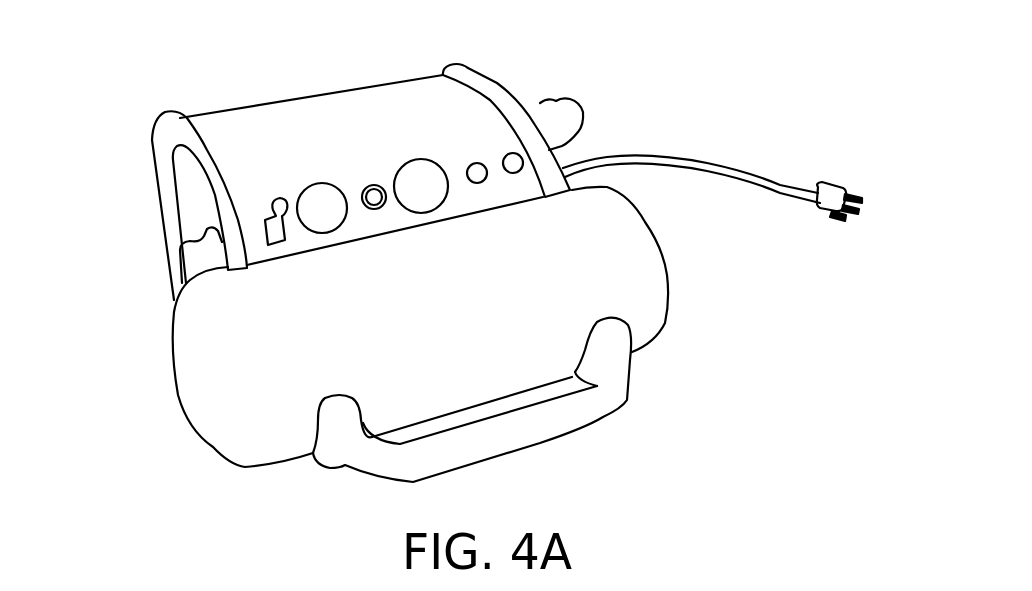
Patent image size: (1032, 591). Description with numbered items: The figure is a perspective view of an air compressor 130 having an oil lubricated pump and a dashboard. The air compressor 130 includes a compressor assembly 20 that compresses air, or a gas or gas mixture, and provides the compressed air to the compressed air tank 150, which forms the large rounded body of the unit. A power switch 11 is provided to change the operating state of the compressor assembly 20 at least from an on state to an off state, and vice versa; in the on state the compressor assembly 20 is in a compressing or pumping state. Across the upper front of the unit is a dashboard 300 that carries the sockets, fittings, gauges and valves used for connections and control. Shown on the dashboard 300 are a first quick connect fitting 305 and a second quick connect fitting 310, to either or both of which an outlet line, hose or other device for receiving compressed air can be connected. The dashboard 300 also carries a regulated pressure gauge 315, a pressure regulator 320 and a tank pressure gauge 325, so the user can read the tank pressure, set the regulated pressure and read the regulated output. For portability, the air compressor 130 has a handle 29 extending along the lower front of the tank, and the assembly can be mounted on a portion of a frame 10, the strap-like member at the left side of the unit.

The frame 10 is at (163, 168).
The power switch 11 is at (272, 208).
The compressor assembly 20 is at (475, 125).
The handle 29 is at (617, 387).
The air compressor 130 is at (641, 105).
The compressed air tank 150 is at (645, 260).
The dashboard 300 is at (213, 126).
The first quick connect fitting 305 is at (513, 175).
The second quick connect fitting 310 is at (477, 182).
The regulated pressure gauge 315 is at (420, 178).
The pressure regulator 320 is at (373, 193).
The tank pressure gauge 325 is at (320, 195).